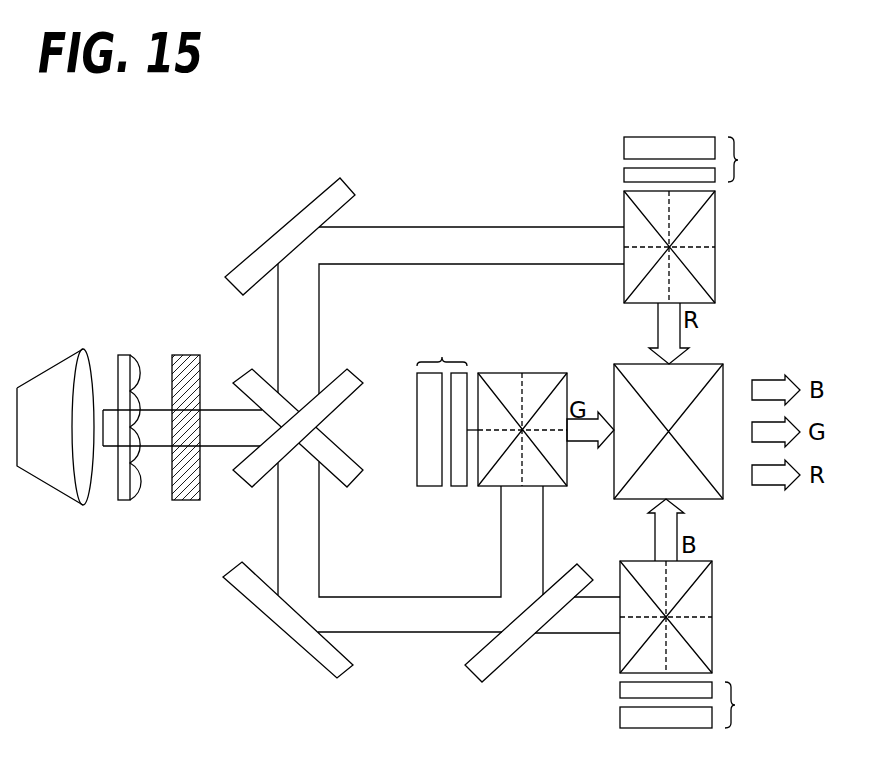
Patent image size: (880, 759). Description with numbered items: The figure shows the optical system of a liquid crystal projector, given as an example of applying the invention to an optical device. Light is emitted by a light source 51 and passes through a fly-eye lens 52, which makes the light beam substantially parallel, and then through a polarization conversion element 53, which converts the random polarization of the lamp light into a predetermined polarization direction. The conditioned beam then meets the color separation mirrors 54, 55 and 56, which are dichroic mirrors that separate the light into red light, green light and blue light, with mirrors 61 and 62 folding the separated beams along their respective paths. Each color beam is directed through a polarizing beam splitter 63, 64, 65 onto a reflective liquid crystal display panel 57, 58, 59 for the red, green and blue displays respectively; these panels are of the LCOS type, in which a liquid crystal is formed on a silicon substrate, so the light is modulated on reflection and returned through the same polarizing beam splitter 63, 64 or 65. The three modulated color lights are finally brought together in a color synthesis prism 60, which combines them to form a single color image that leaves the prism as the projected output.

The light source 51 is at (55, 375).
The fly-eye lens 52 is at (125, 358).
The polarization conversion element 53 is at (186, 358).
The color separation mirror 54 is at (347, 385).
The color separation mirror 55 is at (347, 473).
The color separation mirror 56 is at (494, 672).
The reflective liquid crystal display panel 57 is at (695, 159).
The reflective liquid crystal display panel 58 is at (442, 409).
The reflective liquid crystal display panel 59 is at (691, 705).
The color synthesis prism 60 is at (700, 375).
The mirror 61 is at (342, 192).
The mirror 62 is at (340, 678).
The polarizing beam splitter 63 is at (708, 247).
The polarizing beam splitter 64 is at (522, 387).
The polarizing beam splitter 65 is at (707, 617).